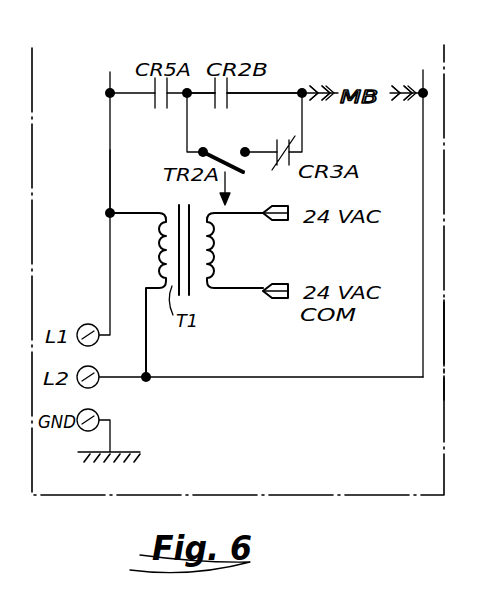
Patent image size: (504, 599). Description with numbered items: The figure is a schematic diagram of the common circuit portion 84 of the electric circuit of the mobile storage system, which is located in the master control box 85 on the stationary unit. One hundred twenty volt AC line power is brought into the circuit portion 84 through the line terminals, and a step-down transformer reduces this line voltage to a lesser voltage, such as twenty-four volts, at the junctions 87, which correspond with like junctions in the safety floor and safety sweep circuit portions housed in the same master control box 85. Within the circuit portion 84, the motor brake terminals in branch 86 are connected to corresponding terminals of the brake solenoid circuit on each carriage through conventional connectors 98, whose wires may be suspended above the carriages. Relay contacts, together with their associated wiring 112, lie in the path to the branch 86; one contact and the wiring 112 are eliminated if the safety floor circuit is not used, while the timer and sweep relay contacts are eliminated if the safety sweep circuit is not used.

The circuit portion 84 is at (103, 182).
The master control box 85 is at (452, 333).
The branch 86 is at (276, 88).
The junctions 87 is at (268, 224).
The connectors 98 is at (327, 89).
The associated wiring 112 is at (197, 88).